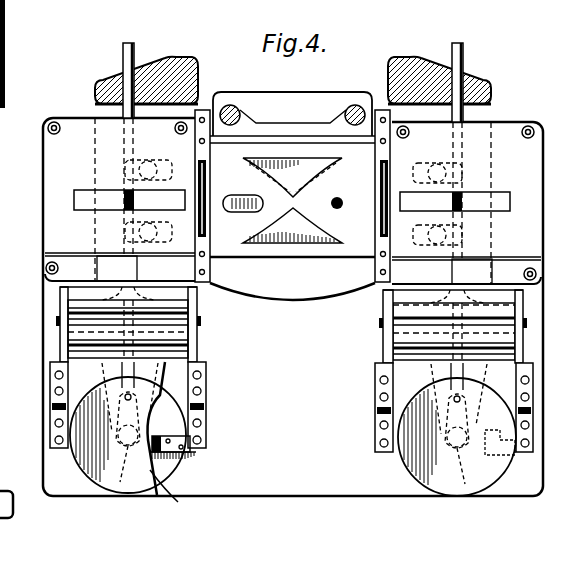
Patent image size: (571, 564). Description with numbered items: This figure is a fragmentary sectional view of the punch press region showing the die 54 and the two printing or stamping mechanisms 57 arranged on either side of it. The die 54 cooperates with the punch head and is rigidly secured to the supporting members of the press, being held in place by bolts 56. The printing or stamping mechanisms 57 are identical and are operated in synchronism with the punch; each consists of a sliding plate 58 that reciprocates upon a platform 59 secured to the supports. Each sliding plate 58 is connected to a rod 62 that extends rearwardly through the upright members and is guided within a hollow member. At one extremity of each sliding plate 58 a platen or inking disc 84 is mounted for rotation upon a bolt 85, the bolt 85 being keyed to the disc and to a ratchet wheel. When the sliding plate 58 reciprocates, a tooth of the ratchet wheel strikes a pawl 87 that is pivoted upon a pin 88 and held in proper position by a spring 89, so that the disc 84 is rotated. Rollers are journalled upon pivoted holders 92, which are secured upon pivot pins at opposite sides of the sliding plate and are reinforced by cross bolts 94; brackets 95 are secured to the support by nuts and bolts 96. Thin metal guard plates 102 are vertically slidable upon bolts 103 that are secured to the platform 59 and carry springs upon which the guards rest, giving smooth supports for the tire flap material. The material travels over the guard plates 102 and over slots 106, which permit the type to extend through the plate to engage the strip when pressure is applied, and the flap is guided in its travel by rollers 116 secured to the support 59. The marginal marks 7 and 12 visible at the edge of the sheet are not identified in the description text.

The frame 7 is at (7, 272).
The base 12 is at (11, 318).
The die 54 is at (351, 251).
The bolts 56 is at (348, 108).
The printing or stamping mechanisms 57 is at (60, 347).
The sliding plates 58 is at (232, 347).
The platform 59 is at (528, 334).
The rods 62 is at (293, 137).
The platen or inking disc 84 is at (88, 466).
The bolt 85 is at (294, 423).
The pawl 87 is at (173, 437).
The pin 88 is at (163, 437).
The spring 89 is at (176, 458).
The pivoted holders 92 is at (207, 375).
The cross bolts 94 is at (203, 320).
The brackets 95 is at (54, 440).
The nuts and bolts 96 is at (54, 423).
The guard plates 102 is at (66, 118).
The bolts 103 is at (47, 132).
The slots 106 is at (84, 211).
The rollers 116 is at (207, 178).